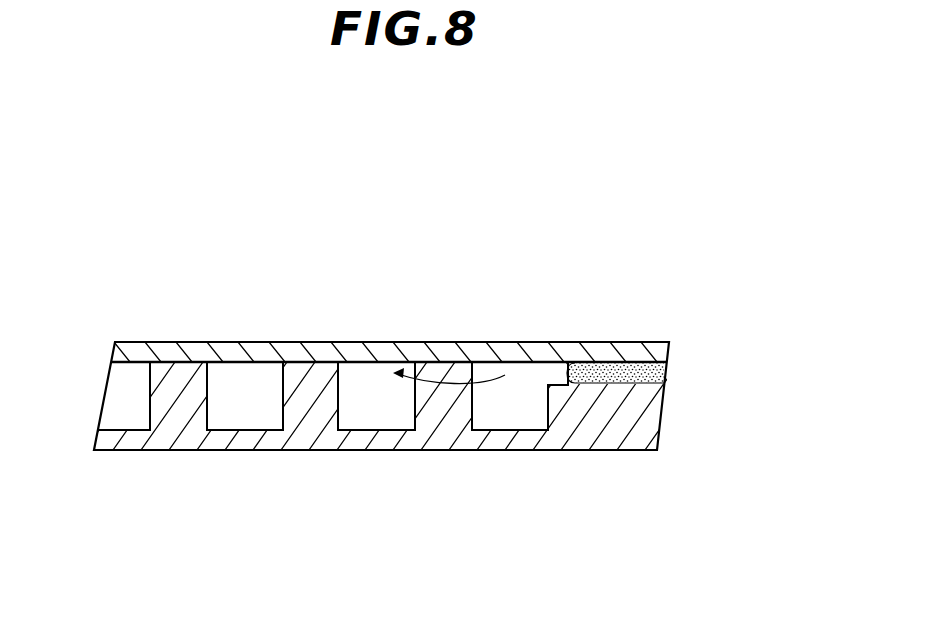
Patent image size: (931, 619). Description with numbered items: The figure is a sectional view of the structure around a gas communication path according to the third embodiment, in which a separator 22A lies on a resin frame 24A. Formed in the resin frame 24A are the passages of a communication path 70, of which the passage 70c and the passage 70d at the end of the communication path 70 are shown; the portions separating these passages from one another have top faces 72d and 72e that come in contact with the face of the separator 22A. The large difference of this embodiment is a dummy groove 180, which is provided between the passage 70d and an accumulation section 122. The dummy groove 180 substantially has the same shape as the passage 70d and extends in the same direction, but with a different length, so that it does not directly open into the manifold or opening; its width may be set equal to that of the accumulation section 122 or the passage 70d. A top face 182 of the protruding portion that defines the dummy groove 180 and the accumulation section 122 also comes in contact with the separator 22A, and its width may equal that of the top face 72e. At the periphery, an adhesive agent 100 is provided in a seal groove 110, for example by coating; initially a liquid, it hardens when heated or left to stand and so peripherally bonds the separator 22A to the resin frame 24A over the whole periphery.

The communication path 70 is at (243, 255).
The passage 70c is at (125, 375).
The passage 70d is at (230, 382).
The top face 72d is at (190, 363).
The top face 72e is at (310, 363).
The dummy groove 180 is at (358, 382).
The top face 182 is at (447, 363).
The accumulation section 122 is at (513, 417).
The seal groove 110 is at (562, 385).
The adhesive agent 100 is at (664, 374).
The separator 22A is at (671, 348).
The resin frame 24A is at (655, 405).